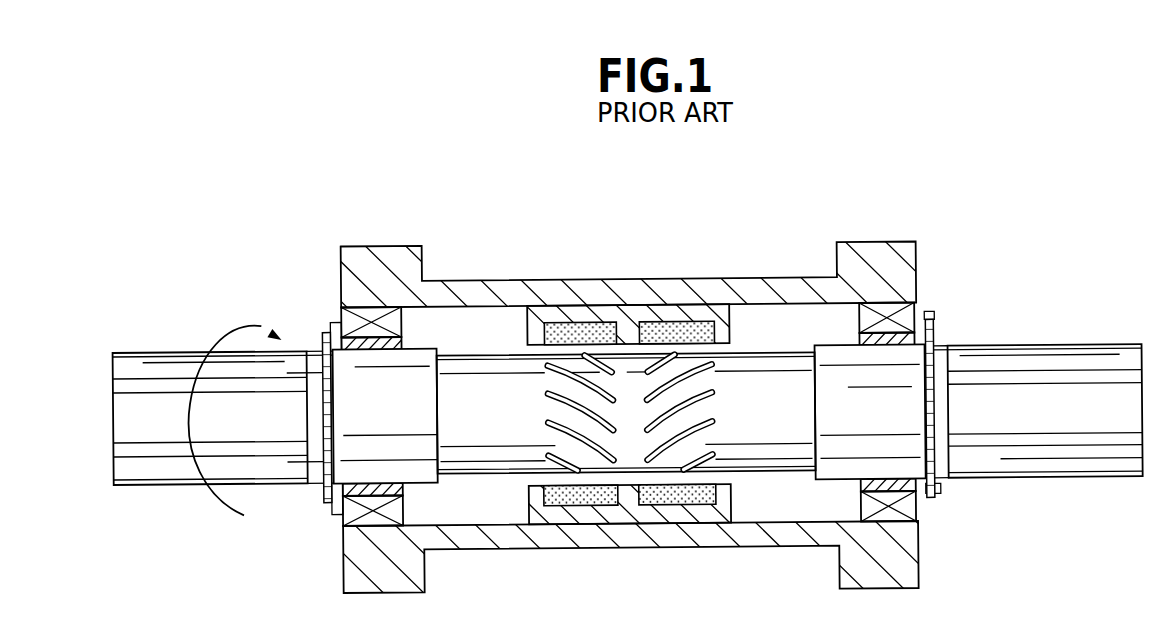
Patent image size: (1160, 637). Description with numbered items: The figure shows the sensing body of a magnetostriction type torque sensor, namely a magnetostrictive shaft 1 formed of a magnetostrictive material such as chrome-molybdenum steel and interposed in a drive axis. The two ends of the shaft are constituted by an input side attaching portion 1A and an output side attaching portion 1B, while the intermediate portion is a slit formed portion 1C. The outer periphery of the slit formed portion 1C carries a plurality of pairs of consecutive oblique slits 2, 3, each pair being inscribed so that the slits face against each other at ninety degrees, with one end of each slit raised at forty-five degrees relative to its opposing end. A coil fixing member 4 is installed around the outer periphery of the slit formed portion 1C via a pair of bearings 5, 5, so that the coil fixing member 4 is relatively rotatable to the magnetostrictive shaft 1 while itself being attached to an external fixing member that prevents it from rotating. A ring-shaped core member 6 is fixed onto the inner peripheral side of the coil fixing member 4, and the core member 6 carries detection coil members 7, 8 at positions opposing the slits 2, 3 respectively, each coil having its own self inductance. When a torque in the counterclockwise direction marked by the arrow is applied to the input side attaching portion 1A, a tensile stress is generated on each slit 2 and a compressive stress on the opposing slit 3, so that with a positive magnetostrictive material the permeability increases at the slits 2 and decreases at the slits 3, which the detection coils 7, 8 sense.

The magnetostrictive shaft 1 is at (627, 404).
The input side attaching portion 1A is at (155, 477).
The output side attaching portion 1B is at (1048, 460).
The slit formed portion 1C is at (767, 350).
The oblique slit 2 is at (572, 443).
The oblique slit 3 is at (687, 443).
The coil fixing member 4 is at (477, 292).
The bearing 5 is at (350, 320).
The core member 6 is at (627, 507).
The detection coil member 7 is at (587, 322).
The detection coil member 8 is at (675, 322).